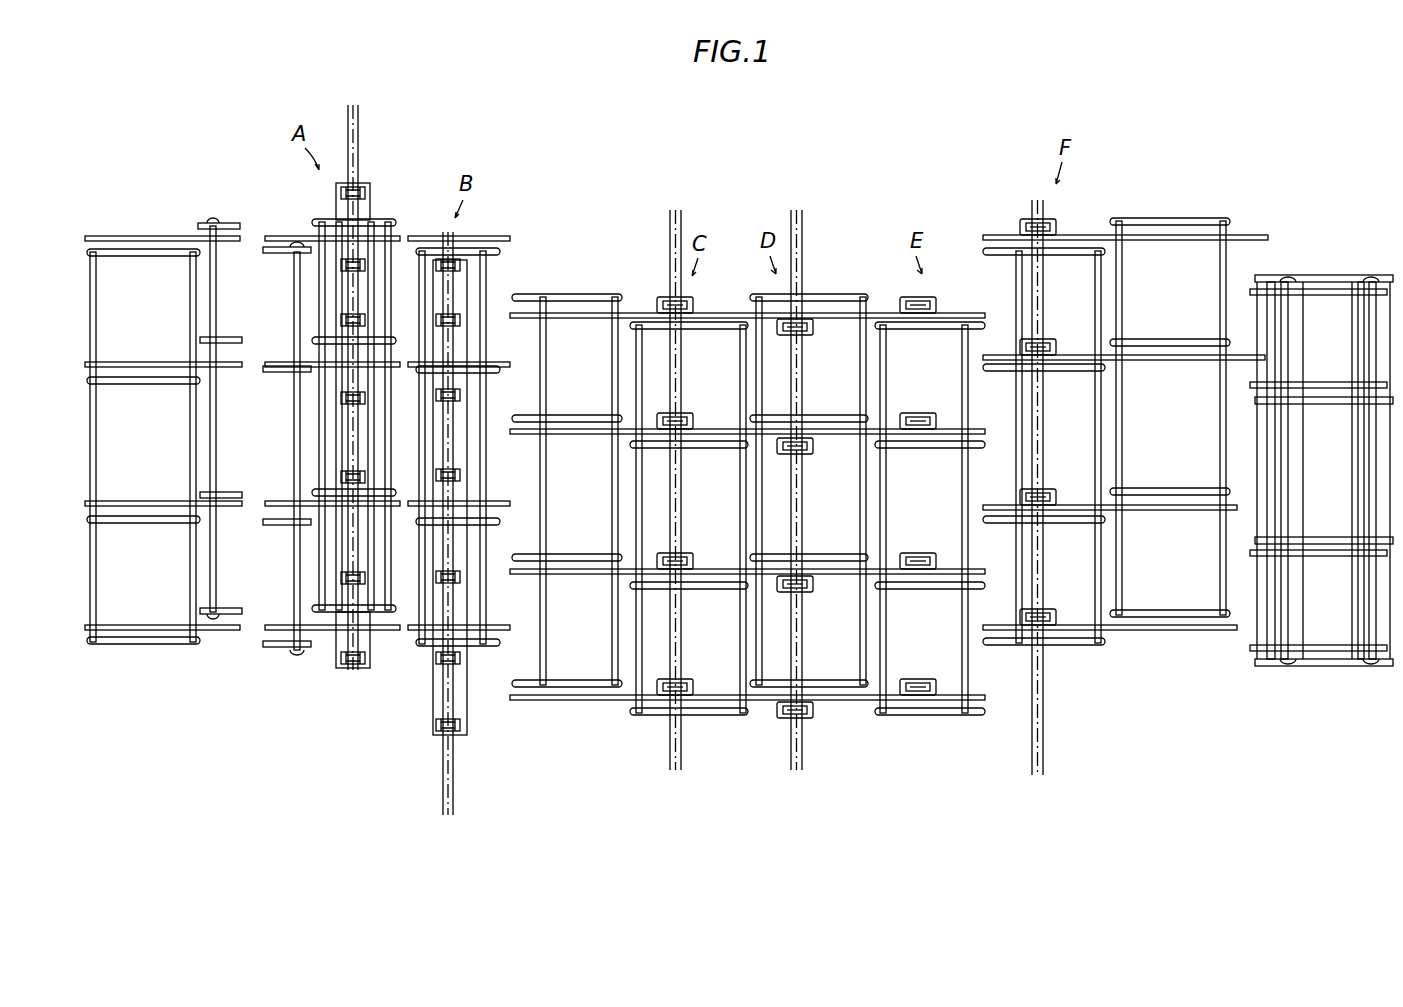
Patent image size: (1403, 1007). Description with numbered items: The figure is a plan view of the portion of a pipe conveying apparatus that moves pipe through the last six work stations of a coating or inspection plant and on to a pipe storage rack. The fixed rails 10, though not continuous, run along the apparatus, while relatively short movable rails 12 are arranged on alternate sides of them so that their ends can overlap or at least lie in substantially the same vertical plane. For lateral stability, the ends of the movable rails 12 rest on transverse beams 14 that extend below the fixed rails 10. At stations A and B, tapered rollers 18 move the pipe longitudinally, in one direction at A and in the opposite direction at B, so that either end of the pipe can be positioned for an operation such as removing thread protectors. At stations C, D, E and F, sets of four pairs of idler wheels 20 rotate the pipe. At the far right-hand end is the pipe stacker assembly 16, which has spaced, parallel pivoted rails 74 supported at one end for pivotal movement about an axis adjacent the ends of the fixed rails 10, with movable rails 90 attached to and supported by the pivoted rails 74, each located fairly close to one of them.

The fixed rails 10 is at (140, 236).
The movable rails 12 is at (142, 255).
The transverse beams 14 is at (90, 312).
The pipe stacker assembly 16 is at (1321, 479).
The tapered rollers 18 is at (348, 376).
The idler wheels 20 is at (696, 405).
The pivoted rails 74 is at (1342, 274).
The movable rails 90 is at (1328, 296).